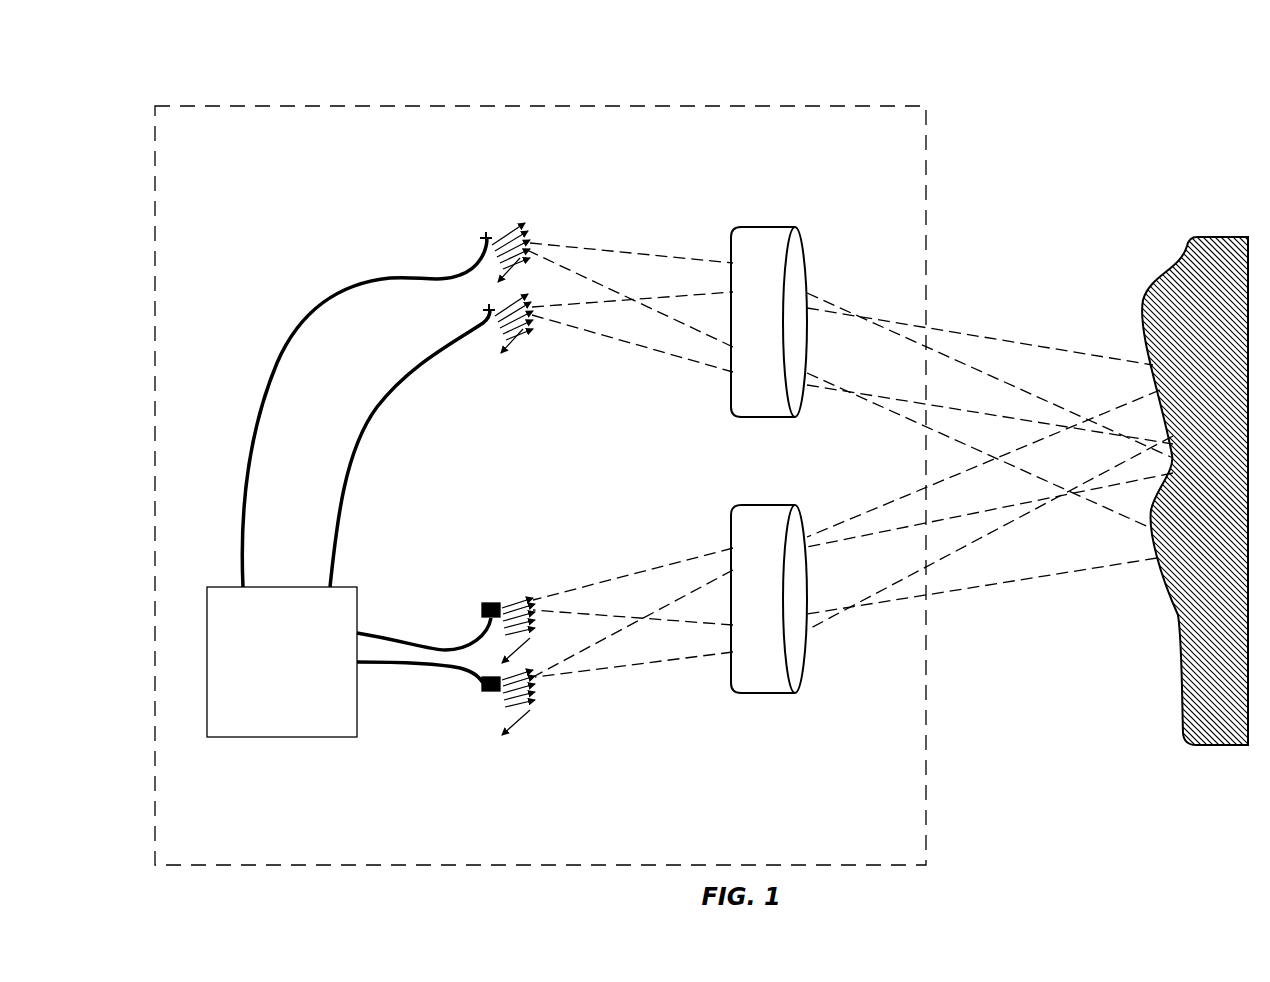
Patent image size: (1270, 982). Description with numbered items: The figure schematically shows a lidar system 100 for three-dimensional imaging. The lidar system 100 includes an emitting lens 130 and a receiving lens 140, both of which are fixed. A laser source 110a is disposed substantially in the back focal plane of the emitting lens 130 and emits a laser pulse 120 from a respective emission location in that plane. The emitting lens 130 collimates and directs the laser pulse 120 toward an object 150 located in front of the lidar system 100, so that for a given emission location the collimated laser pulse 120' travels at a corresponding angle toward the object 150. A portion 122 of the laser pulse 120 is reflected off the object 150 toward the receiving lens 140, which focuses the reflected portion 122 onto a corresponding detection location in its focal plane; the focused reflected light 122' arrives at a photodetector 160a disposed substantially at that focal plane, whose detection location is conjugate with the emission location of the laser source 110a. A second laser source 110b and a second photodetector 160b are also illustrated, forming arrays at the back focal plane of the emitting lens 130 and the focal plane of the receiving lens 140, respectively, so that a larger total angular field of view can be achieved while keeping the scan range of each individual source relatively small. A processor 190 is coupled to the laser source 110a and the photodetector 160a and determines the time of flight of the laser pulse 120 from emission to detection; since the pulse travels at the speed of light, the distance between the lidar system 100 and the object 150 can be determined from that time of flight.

The lidar system 100 is at (545, 106).
The laser source 110a is at (493, 230).
The second laser source 110b is at (483, 335).
The laser pulse 120 is at (630, 276).
The collimated laser pulse 120' is at (990, 394).
The portion of the laser pulse 122 is at (990, 518).
The focused reflected light 122' is at (633, 592).
The emitting lens 130 is at (805, 268).
The receiving lens 140 is at (805, 672).
The object 150 is at (1186, 253).
The photodetector 160a is at (485, 603).
The second photodetector 160b is at (487, 691).
The processor 190 is at (278, 737).